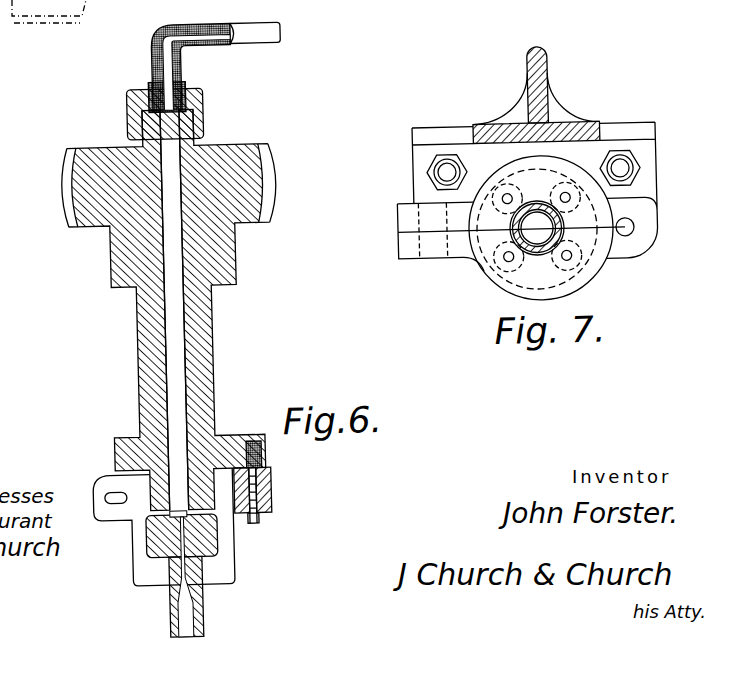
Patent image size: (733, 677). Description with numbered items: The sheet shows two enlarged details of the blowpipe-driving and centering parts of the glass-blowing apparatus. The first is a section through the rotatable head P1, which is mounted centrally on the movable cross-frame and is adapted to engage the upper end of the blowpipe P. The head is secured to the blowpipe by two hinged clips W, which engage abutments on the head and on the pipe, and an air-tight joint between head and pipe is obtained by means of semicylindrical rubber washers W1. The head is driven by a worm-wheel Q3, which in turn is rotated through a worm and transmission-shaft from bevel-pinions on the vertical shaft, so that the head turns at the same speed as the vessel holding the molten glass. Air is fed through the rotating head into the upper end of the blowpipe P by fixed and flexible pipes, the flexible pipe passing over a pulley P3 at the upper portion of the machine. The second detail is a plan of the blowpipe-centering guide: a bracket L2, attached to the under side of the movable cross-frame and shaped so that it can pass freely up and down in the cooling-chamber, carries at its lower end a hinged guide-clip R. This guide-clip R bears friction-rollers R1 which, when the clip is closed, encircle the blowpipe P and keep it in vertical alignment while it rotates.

In FIG. 6, the worm-wheel Q3 is at (72, 188).
In FIG. 6, the pulley P3 is at (230, 68).
In FIG. 6, the rotatable head P1 is at (218, 443).
In FIG. 6, the semicylindrical rubber washers W1 is at (144, 534).
In FIG. 6, the hinged clips W is at (212, 559).
In FIG. 6, the blowpipe P is at (178, 624).
In FIG. 7, the blowpipe P is at (521, 217).
In FIG. 7, the bracket L2 is at (531, 65).
In FIG. 7, the hinged guide-clip R is at (412, 242).
In FIG. 7, the friction-rollers R1 is at (506, 260).